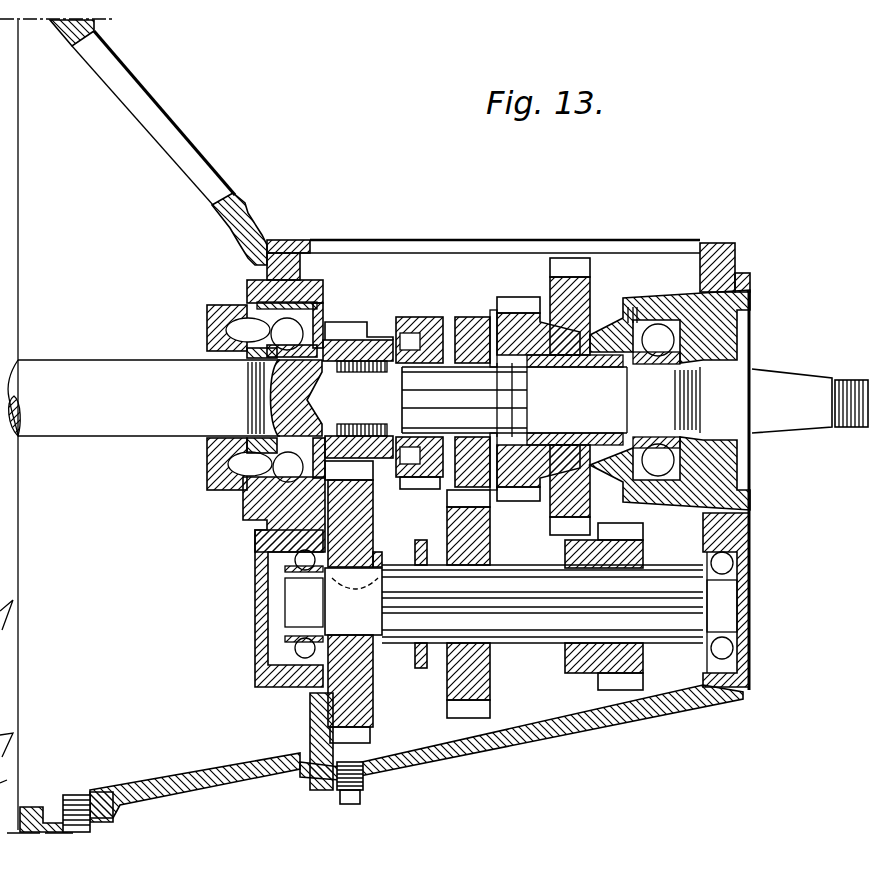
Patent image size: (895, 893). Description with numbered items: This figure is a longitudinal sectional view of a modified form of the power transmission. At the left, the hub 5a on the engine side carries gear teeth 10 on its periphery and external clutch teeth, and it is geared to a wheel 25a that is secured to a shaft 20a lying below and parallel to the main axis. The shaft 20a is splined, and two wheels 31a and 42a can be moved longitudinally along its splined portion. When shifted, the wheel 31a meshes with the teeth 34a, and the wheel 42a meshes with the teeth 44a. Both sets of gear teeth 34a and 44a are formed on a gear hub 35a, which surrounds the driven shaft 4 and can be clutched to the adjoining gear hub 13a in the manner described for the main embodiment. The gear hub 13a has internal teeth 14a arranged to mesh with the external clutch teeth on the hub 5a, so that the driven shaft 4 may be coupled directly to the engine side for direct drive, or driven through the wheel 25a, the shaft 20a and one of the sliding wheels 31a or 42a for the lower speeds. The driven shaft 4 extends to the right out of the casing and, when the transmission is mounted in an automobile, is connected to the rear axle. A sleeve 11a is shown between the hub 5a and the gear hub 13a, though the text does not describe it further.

The driven shaft 4 is at (786, 376).
The hub 5a is at (262, 380).
The gear teeth 10 is at (340, 322).
The sleeve 11a is at (380, 338).
The gear hub 13a is at (460, 327).
The internal teeth 14a is at (413, 333).
The shaft 20a is at (514, 604).
The wheel 25a is at (367, 520).
The wheel 31a is at (490, 670).
The teeth 34a is at (522, 300).
The gear hub 35a is at (567, 327).
The wheel 42a is at (647, 665).
The teeth 44a is at (570, 267).